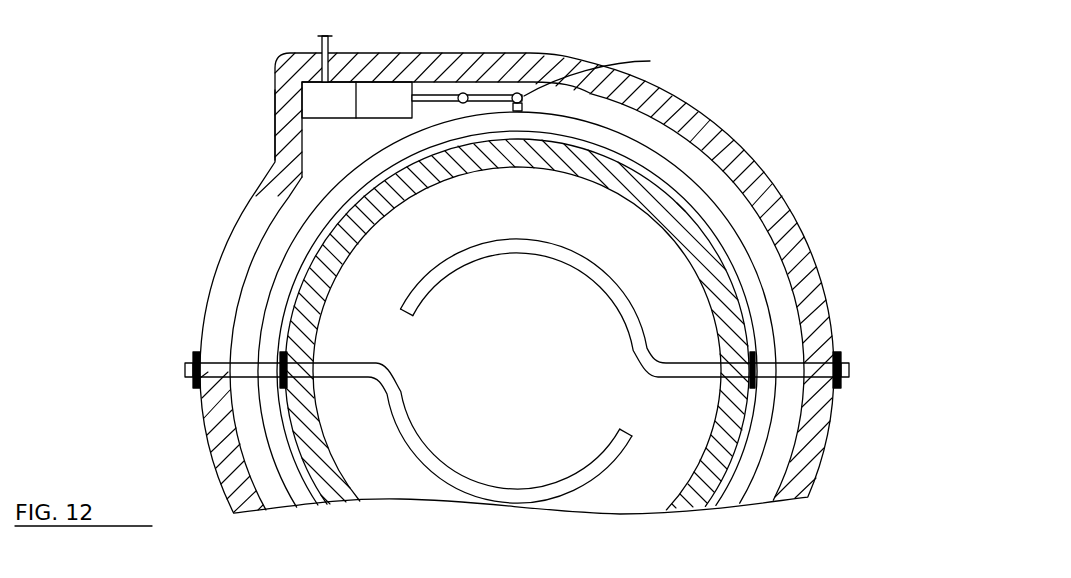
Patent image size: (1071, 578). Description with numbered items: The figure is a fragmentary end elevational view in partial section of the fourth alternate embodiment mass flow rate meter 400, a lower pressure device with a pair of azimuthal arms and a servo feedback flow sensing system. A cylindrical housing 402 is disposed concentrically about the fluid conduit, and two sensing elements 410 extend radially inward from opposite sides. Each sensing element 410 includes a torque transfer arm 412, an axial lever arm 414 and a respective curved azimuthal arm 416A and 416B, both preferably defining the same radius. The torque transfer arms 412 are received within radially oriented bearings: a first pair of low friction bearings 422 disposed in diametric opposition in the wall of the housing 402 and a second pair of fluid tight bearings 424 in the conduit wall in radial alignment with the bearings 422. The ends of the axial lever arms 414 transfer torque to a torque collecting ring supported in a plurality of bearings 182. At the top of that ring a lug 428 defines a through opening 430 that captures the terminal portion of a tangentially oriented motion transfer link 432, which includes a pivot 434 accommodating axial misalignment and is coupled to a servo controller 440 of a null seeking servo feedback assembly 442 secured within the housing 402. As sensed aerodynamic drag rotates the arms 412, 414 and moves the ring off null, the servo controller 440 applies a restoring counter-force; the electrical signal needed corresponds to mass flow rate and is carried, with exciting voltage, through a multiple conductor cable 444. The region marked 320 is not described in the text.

The mass flow rate meter 400 is at (846, 145).
The housing 402 is at (805, 276).
The sensing element 410 is at (185, 368).
The torque transfer arm 412 is at (242, 372).
The axial lever arm 414 is at (263, 372).
The curved azimuthal arm 416A is at (463, 267).
The curved azimuthal arm 416B is at (445, 460).
The low friction bearing 422 is at (200, 386).
The fluid tight bearing 424 is at (282, 356).
The lug 428 is at (522, 90).
The through opening 430 is at (609, 73).
The motion transfer link 432 is at (487, 95).
The pivot 434 is at (461, 93).
The servo controller 440 is at (389, 100).
The servo feedback assembly 442 is at (283, 105).
The multiple conductor cable 444 is at (322, 42).
The bearings 182 is at (683, 203).
The sleeve 320 is at (625, 140).